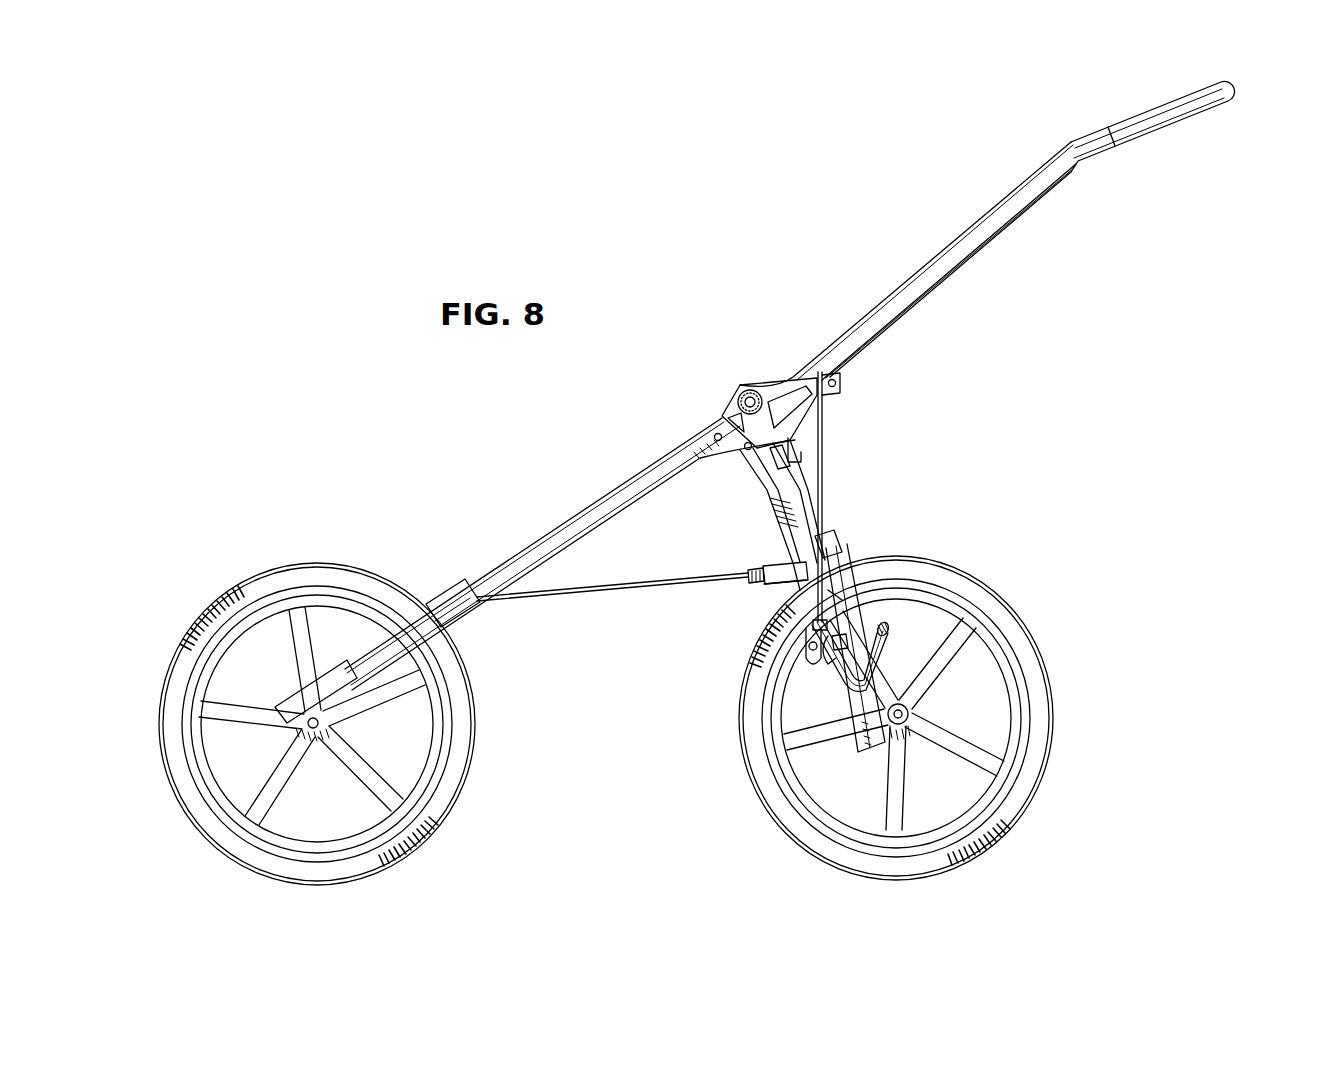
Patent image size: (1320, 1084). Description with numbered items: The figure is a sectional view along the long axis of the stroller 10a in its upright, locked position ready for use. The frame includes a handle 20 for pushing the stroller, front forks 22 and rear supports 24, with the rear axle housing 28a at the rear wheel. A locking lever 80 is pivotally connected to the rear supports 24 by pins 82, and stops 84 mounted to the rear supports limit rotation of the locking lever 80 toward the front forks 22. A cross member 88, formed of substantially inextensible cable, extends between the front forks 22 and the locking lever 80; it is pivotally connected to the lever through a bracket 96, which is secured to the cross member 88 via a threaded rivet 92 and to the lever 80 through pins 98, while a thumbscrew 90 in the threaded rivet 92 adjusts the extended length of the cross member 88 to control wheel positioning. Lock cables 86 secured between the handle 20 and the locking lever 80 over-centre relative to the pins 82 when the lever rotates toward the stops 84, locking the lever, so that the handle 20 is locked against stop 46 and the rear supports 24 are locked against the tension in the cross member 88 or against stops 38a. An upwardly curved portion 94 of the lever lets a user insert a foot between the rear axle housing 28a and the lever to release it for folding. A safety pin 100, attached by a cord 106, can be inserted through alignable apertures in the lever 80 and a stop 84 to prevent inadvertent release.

The stroller 10a is at (613, 437).
The handle 20 is at (913, 283).
The front forks 22 is at (543, 537).
The rear supports 24 is at (888, 618).
The rear axle housing 28a is at (912, 690).
The stops 38a is at (785, 461).
The stops 46 is at (822, 380).
The locking lever 80 is at (893, 653).
The pins 82 is at (808, 565).
The stops 84 is at (830, 635).
The lock cables 86 is at (827, 428).
The cross member 88 is at (581, 594).
The thumbscrew 90 is at (757, 583).
The threaded rivets 92 is at (752, 568).
The upwardly curved portion 94 is at (835, 603).
The bracket 96 is at (807, 640).
The pins 98 is at (775, 562).
The pin 100 is at (850, 650).
The cord 106 is at (846, 640).